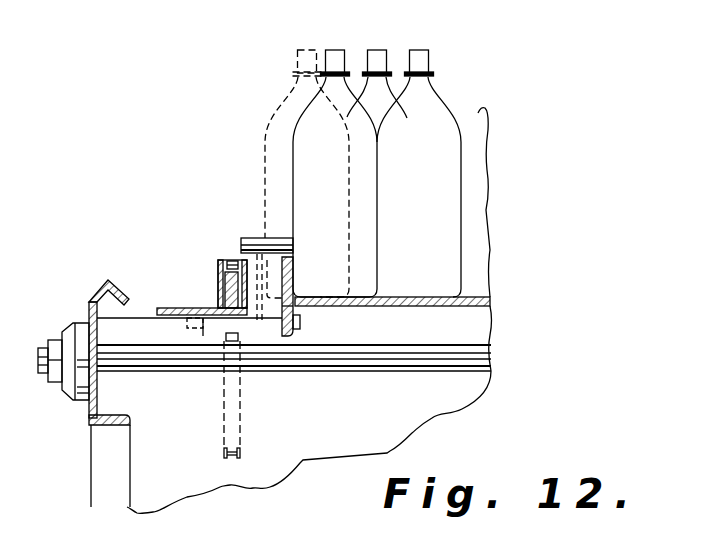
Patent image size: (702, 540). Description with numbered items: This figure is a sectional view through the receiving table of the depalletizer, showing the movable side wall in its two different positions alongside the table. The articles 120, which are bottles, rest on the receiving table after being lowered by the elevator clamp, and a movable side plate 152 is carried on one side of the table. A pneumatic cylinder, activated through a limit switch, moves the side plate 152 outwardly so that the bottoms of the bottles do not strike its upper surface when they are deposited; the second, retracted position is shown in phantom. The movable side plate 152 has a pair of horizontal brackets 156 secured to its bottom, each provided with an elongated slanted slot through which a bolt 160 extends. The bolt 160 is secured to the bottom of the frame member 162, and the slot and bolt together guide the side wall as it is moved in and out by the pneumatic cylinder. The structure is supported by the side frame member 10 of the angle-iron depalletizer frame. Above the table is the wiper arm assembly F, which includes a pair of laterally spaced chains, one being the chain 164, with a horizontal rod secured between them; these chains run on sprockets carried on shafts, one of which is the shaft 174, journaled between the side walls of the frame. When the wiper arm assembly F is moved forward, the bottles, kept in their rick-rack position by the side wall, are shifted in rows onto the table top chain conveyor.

The side frame member 10 is at (89, 312).
The articles 120 is at (327, 50).
The movable side plate 152 is at (250, 338).
The horizontal bracket 156 is at (222, 337).
The bolt 160 is at (226, 341).
The frame member 162 is at (188, 307).
The chain 164 is at (232, 261).
The shaft 174 is at (379, 357).
The wiper arm assembly F is at (260, 240).